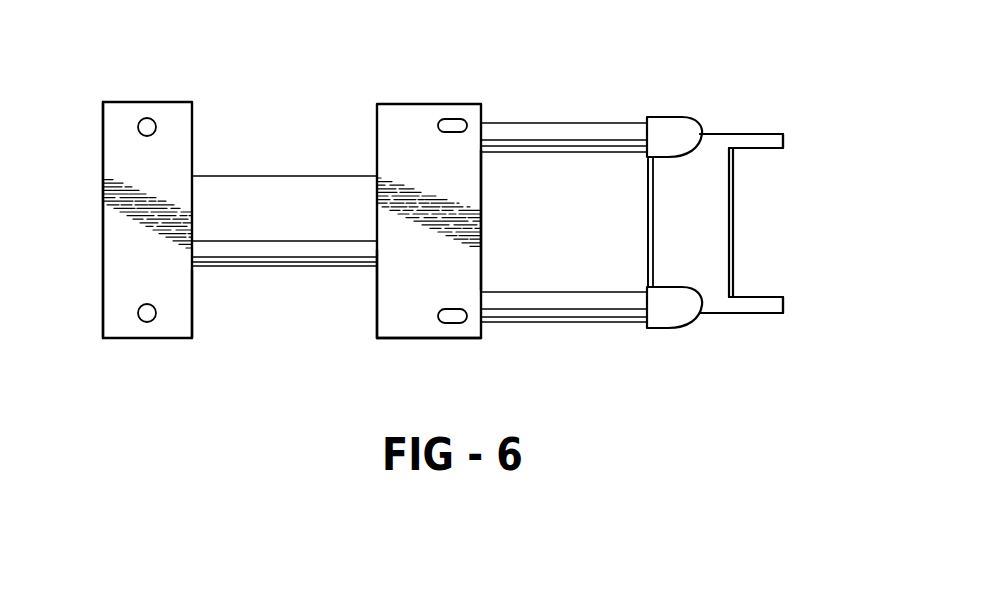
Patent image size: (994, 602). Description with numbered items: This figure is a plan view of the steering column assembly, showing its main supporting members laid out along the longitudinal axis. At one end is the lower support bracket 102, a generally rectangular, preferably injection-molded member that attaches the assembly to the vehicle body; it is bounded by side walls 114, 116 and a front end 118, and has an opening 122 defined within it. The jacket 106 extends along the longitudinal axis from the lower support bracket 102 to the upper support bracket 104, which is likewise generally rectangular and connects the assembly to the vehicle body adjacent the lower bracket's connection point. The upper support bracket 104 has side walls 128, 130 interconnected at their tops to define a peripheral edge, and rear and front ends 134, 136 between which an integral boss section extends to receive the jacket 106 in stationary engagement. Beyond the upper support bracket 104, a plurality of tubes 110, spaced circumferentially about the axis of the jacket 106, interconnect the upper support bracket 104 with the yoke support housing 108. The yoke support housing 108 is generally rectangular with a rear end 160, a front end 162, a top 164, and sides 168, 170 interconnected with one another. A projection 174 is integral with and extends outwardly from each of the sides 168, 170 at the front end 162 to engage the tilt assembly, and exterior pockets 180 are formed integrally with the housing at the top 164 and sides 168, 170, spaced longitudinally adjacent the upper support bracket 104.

The lower support bracket 102 is at (171, 128).
The upper support bracket 104 is at (418, 113).
The jacket 106 is at (270, 188).
The yoke support housing 108 is at (706, 152).
The tubes 110 is at (557, 128).
The side wall 114 is at (143, 338).
The side wall 116 is at (150, 102).
The front end 118 is at (192, 302).
The opening 122 is at (103, 233).
The side wall 128 is at (427, 340).
The side wall 130 is at (450, 104).
The rear end 134 is at (375, 317).
The front end 136 is at (481, 223).
The rear end 160 is at (643, 222).
The front end 162 is at (733, 215).
The top 164 is at (707, 282).
The side 168 is at (757, 313).
The side 170 is at (757, 133).
The projection 174 is at (787, 146).
The exterior pockets 180 is at (668, 143).